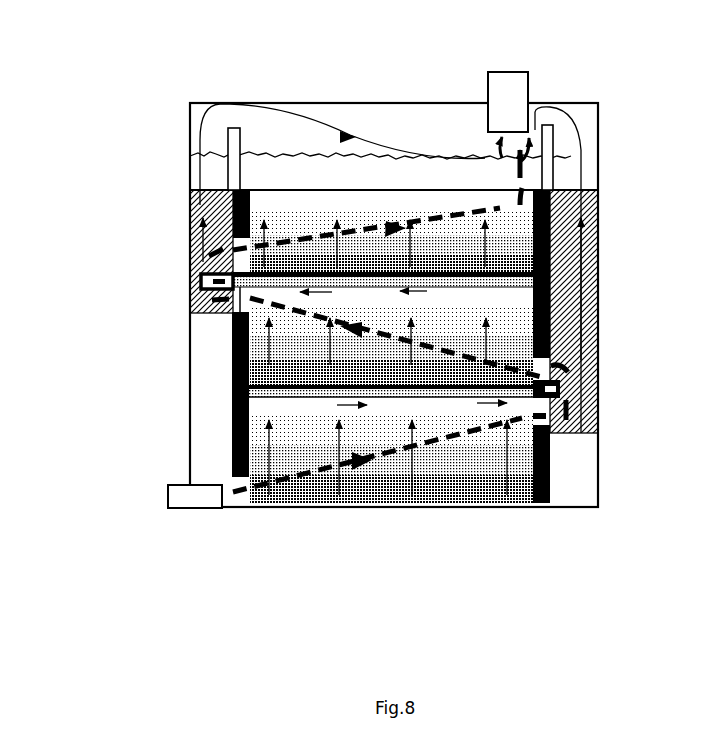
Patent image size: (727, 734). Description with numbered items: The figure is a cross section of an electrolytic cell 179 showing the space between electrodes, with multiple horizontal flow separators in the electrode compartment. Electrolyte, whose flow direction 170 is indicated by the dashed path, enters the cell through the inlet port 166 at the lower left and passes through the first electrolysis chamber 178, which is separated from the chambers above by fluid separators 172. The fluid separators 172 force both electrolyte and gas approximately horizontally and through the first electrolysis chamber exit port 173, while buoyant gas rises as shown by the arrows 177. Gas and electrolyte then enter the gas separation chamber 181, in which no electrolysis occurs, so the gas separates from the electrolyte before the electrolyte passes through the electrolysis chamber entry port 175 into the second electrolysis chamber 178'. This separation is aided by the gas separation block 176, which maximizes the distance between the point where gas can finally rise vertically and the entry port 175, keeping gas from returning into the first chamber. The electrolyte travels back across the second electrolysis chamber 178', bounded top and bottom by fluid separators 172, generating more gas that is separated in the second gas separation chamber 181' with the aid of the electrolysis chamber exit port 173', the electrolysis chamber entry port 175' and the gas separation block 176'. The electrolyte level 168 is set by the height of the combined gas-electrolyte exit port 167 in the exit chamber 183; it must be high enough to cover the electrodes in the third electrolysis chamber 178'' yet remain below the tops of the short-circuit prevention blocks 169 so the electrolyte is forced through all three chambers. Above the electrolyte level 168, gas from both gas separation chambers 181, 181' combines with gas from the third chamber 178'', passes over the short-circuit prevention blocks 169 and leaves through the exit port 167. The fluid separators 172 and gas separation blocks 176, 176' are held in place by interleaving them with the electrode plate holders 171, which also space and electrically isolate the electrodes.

The inlet port 166 is at (168, 500).
The combined gas-electrolyte exit port 167 is at (522, 78).
The electrolyte level 168 is at (572, 160).
The short-circuit prevention blocks 169 is at (232, 140).
The electrolyte flow direction 170 is at (283, 483).
The electrode plate holders 171 is at (190, 188).
The fluid separators 172 is at (230, 400).
The first electrolysis chamber exit port 173 is at (621, 433).
The electrolysis chamber exit port 173' is at (169, 306).
The electrolysis chamber entry port 175 is at (625, 341).
The electrolysis chamber entry port 175' is at (165, 240).
The gas separation block 176 is at (621, 406).
The gas separation block 176' is at (147, 297).
The arrows indicating gas rise 177 is at (203, 212).
The first electrolysis chamber 178 is at (391, 508).
The second electrolysis chamber 178' is at (275, 350).
The third electrolysis chamber 178'' is at (391, 163).
The electrolytic cell 179 is at (606, 581).
The gas separation chamber 181 is at (608, 322).
The gas separation chamber 181' is at (175, 124).
The exit chamber 183 is at (330, 120).